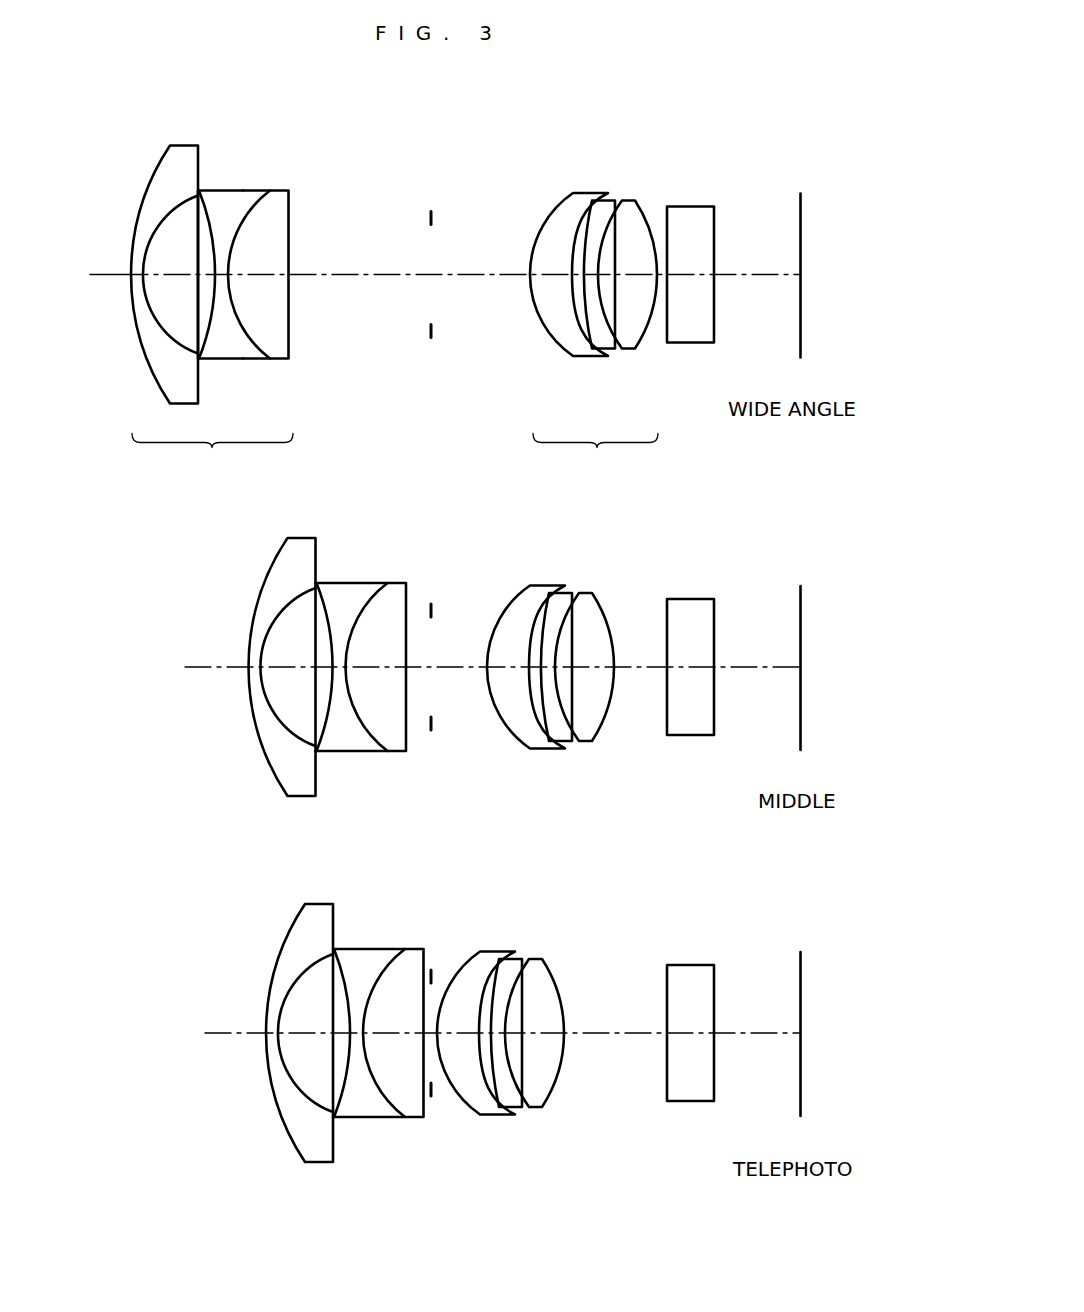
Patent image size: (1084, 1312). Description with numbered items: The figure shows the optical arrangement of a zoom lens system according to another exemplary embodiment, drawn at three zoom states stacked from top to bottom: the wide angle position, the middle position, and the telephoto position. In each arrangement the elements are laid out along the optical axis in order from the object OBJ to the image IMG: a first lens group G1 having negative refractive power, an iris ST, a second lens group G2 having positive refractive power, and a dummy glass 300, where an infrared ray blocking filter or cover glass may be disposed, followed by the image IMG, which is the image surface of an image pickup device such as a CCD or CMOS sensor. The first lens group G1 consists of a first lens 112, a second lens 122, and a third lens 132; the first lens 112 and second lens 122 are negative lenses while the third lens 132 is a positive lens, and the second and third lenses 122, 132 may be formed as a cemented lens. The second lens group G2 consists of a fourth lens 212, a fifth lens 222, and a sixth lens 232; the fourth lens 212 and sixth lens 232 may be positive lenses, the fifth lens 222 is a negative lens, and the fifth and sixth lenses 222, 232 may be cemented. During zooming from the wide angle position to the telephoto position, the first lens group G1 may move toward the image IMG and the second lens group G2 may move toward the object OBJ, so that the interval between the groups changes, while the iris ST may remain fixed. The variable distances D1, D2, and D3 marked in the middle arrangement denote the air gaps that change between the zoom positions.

The first lens 112 is at (167, 243).
The second lens 122 is at (224, 245).
The third lens 132 is at (263, 241).
The fourth lens 212 is at (569, 248).
The fifth lens 222 is at (612, 232).
The sixth lens 232 is at (631, 245).
The dummy glass 300 is at (695, 237).
The iris ST is at (431, 242).
The image IMG is at (799, 244).
The object OBJ is at (61, 276).
The first lens group G1 is at (212, 454).
The second lens group G2 is at (595, 453).
The variable distance D1 is at (417, 730).
The variable distance D2 is at (462, 730).
The variable distance D3 is at (642, 730).